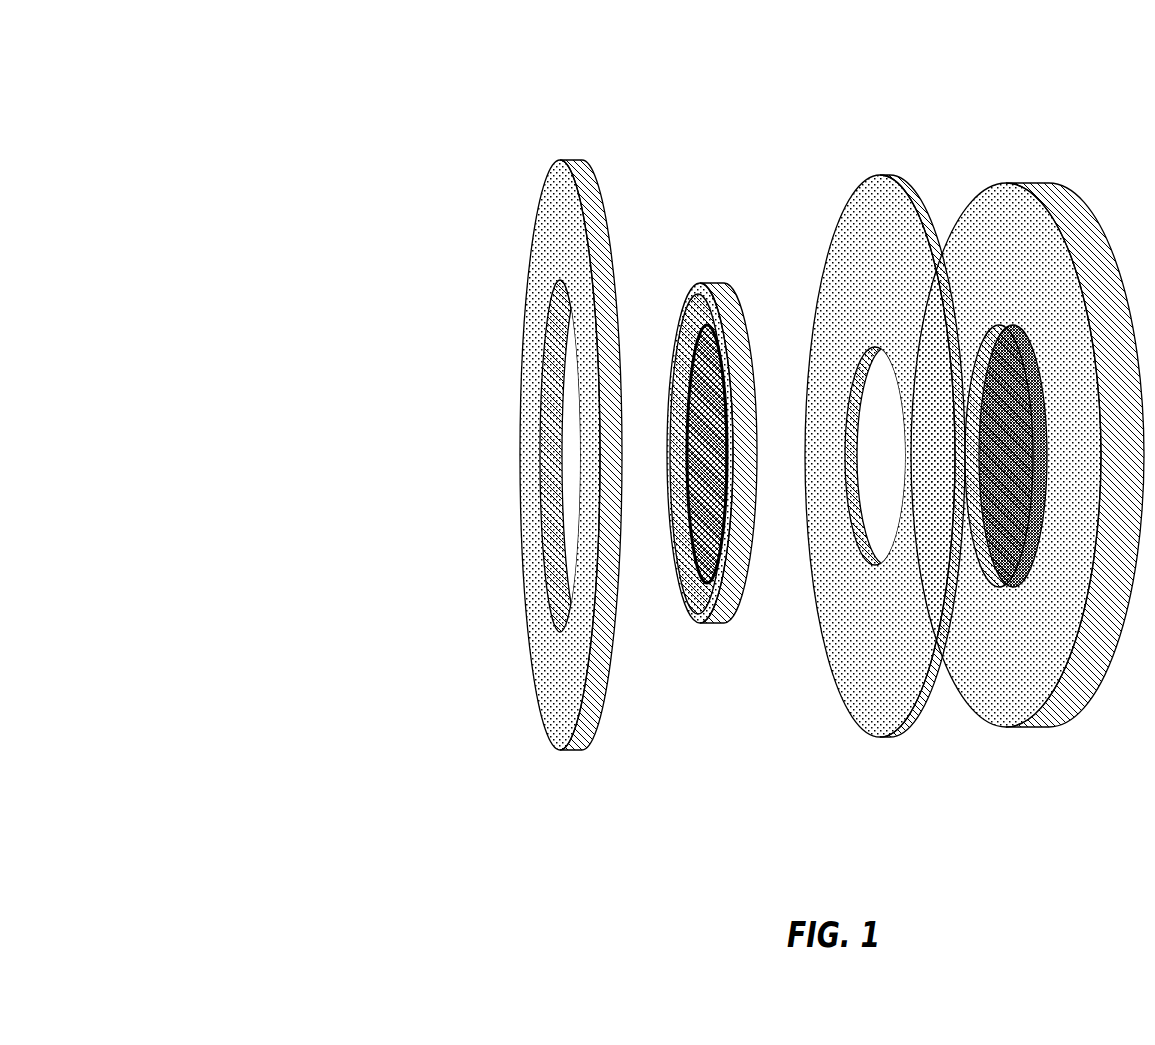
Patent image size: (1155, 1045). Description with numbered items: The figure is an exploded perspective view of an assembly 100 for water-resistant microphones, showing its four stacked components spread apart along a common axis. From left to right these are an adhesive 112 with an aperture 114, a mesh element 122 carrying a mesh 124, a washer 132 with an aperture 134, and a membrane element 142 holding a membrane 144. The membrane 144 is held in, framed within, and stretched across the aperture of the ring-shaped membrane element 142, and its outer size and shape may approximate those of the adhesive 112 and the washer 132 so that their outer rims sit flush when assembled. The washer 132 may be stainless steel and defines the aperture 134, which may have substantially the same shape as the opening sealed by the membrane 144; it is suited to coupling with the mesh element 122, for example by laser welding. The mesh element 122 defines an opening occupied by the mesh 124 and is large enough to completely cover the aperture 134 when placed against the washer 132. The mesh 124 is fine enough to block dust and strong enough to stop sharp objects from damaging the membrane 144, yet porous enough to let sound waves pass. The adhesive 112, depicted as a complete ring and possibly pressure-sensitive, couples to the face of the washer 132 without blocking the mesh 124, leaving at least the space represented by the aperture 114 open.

The assembly 100 is at (230, 96).
The adhesive 112 is at (503, 455).
The aperture 114 is at (572, 447).
The mesh element 122 is at (695, 377).
The mesh 124 is at (713, 443).
The washer 132 is at (869, 405).
The aperture 134 is at (873, 457).
The membrane element 142 is at (1027, 440).
The membrane 144 is at (1017, 470).